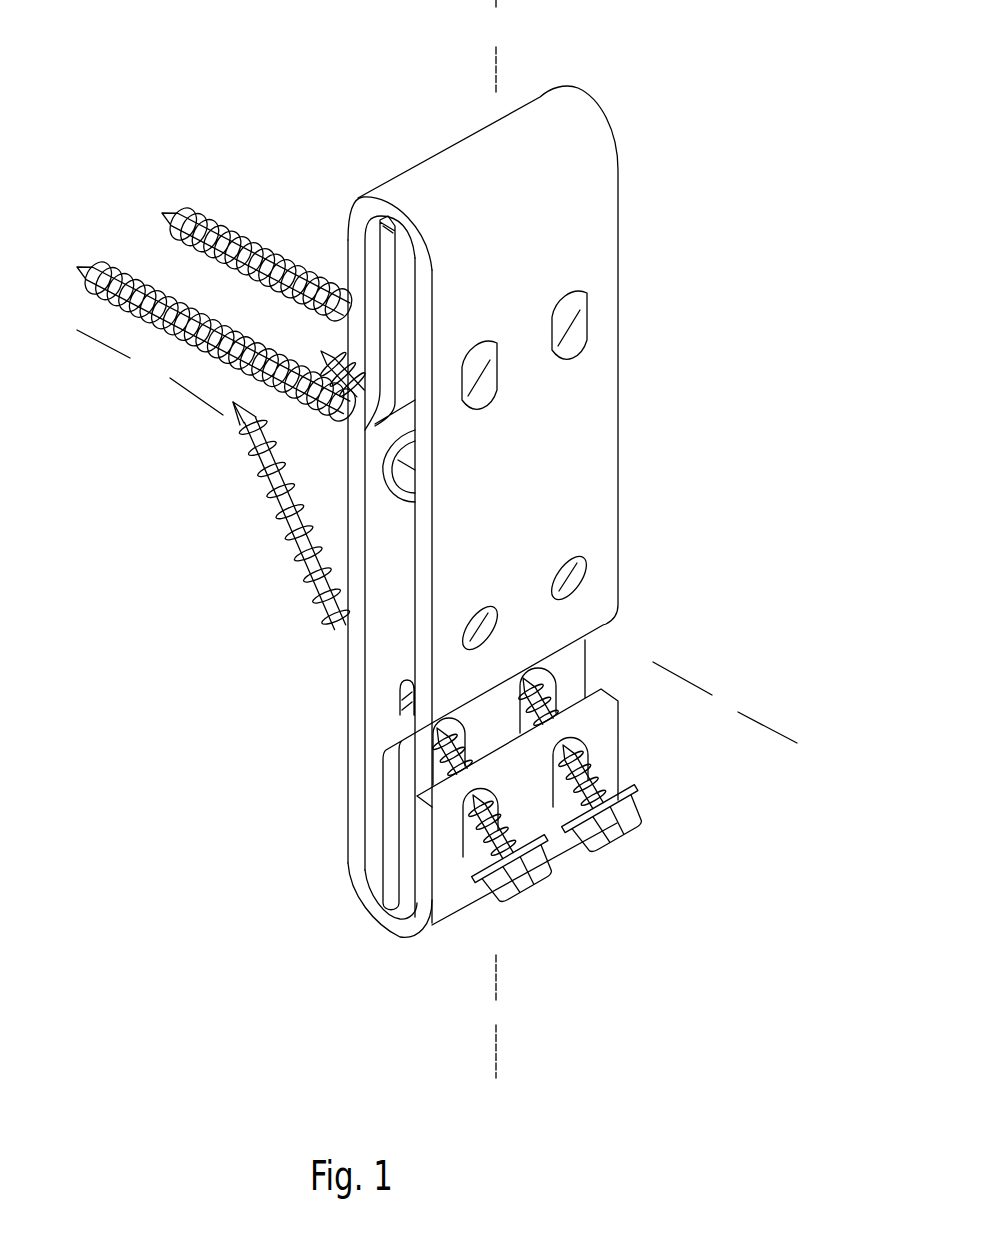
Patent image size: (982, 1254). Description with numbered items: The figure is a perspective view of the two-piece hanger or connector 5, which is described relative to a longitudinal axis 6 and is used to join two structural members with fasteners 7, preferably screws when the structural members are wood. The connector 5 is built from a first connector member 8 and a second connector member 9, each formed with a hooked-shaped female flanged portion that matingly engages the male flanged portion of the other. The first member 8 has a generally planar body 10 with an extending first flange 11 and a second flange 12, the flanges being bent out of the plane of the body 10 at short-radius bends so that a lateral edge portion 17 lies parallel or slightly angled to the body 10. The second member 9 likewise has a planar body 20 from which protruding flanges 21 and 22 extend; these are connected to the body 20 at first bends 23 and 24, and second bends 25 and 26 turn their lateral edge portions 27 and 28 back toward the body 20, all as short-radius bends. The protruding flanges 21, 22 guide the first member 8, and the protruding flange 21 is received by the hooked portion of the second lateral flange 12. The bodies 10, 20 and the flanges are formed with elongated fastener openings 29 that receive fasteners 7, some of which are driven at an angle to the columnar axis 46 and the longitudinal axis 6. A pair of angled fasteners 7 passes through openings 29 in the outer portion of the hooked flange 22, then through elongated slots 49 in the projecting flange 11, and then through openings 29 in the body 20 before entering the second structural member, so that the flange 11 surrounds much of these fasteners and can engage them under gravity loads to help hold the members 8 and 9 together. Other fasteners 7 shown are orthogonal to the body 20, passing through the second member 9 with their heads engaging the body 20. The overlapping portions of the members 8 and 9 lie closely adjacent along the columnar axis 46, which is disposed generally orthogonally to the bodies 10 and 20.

The connector 5 is at (398, 935).
The longitudinal axis 6 is at (496, 539).
The fasteners 7 is at (218, 222).
The first connector member 8 is at (470, 551).
The second connector member 9 is at (348, 710).
The body 10 is at (620, 419).
The first flange 11 is at (382, 842).
The second flange 12 is at (358, 200).
The lateral edge portion 17 is at (393, 923).
The body 20 is at (348, 797).
The first flange 21 is at (363, 378).
The second flange 22 is at (410, 943).
The first bend 23 is at (333, 440).
The first bend 24 is at (366, 917).
The second bend 25 is at (415, 400).
The second bend 26 is at (443, 930).
The lateral edge portion 27 is at (388, 216).
The lateral edge portion 28 is at (607, 694).
The fastener openings 29 is at (492, 343).
The columnar axis 46 is at (437, 536).
The elongated slots 49 is at (443, 722).